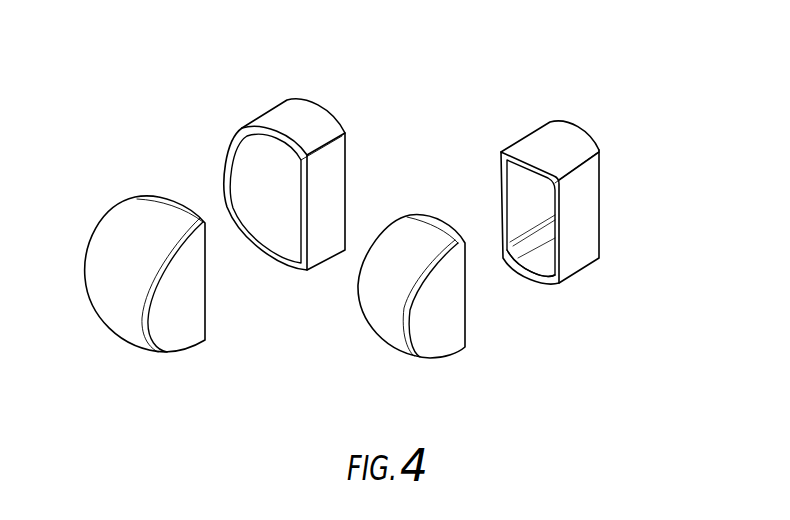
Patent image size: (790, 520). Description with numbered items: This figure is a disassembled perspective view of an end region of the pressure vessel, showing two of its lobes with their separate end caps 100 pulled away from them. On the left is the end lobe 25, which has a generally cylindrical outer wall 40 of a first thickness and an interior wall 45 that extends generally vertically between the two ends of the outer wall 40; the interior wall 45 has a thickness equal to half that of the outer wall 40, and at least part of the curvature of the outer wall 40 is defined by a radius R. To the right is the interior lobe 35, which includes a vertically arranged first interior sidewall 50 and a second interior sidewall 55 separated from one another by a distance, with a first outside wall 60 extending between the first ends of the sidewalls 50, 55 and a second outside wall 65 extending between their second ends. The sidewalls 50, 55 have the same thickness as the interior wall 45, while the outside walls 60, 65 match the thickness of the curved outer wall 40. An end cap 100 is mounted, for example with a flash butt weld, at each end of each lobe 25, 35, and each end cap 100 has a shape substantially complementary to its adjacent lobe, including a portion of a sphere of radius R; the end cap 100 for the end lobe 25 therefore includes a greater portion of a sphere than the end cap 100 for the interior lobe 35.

The left end lobe 25 is at (287, 139).
The cylindrical outer wall 40 is at (222, 163).
The interior wall 45 is at (343, 200).
The end cap 100 is at (107, 242).
The interior lobe 35 is at (580, 205).
The first interior sidewall 50 is at (500, 198).
The second interior sidewall 55 is at (592, 215).
The first outside wall 60 is at (558, 143).
The second outside wall 65 is at (532, 277).